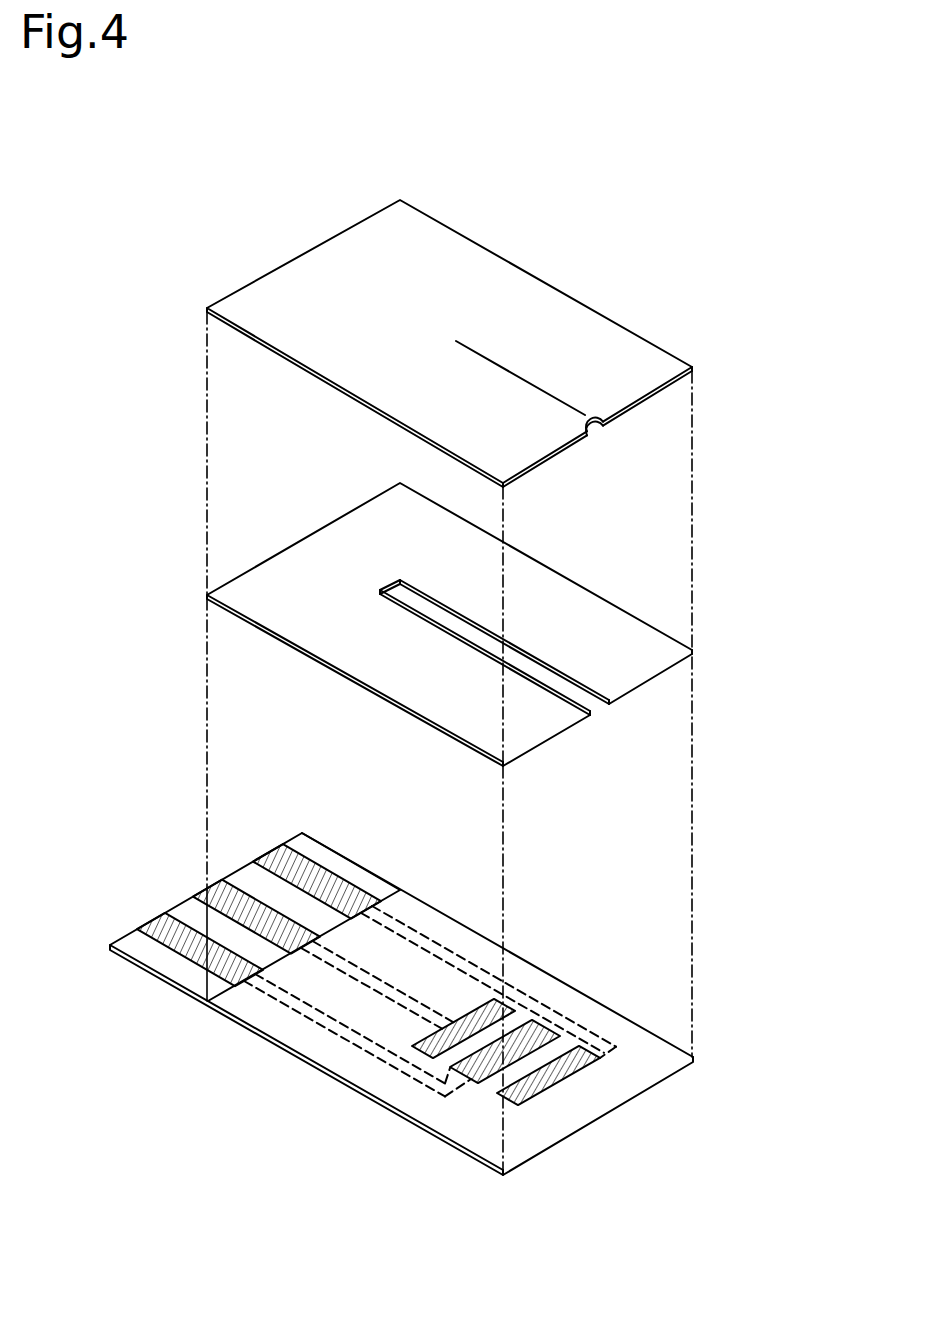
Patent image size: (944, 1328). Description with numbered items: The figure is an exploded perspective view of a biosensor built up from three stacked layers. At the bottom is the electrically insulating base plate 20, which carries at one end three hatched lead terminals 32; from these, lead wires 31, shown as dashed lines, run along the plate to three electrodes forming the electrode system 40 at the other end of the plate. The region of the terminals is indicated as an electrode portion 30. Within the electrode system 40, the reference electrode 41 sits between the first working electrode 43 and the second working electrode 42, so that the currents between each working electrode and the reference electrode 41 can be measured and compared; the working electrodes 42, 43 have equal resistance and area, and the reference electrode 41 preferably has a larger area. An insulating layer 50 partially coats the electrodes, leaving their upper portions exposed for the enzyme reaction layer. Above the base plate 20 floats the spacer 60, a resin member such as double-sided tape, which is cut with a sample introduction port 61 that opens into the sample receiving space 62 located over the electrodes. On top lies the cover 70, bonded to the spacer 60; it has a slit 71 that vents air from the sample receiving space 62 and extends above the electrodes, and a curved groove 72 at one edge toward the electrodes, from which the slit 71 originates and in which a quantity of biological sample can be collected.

The base plate 20 is at (347, 1085).
The electrode portion 30 is at (437, 828).
The lead wires 31 is at (404, 927).
The lead terminals 32 is at (337, 890).
The electrode system 40 is at (529, 990).
The reference electrode 41 is at (537, 1020).
The working electrode 42 is at (490, 998).
The working electrode 43 is at (583, 1046).
The insulating layer 50 is at (442, 982).
The spacer 60 is at (316, 540).
The sample introduction port 61 is at (584, 698).
The sample receiving space 62 is at (408, 598).
The cover 70 is at (499, 281).
The slit 71 is at (557, 393).
The curved groove 72 is at (598, 421).